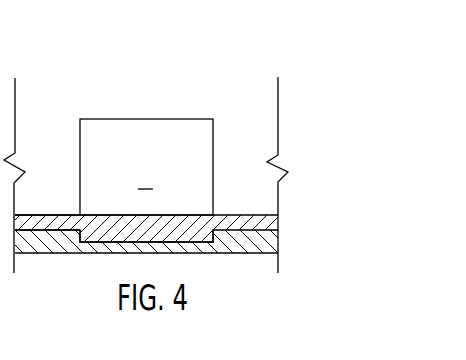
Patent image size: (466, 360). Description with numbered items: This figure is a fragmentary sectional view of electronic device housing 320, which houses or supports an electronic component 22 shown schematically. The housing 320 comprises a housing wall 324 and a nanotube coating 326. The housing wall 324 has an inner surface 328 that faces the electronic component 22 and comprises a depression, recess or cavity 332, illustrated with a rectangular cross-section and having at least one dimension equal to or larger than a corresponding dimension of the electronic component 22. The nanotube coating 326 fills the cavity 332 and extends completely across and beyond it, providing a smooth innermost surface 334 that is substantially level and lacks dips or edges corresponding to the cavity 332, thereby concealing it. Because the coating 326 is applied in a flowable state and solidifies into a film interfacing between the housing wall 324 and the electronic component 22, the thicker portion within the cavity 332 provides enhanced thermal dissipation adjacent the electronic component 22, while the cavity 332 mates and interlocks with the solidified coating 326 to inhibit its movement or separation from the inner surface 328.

The electronic component 22 is at (113, 119).
The electronic device housing 320 is at (245, 209).
The housing wall 324 is at (242, 253).
The nanotube coating 326 is at (33, 214).
The inner surface 328 is at (40, 231).
The cavity 332 is at (197, 253).
The innermost surface 334 is at (53, 214).